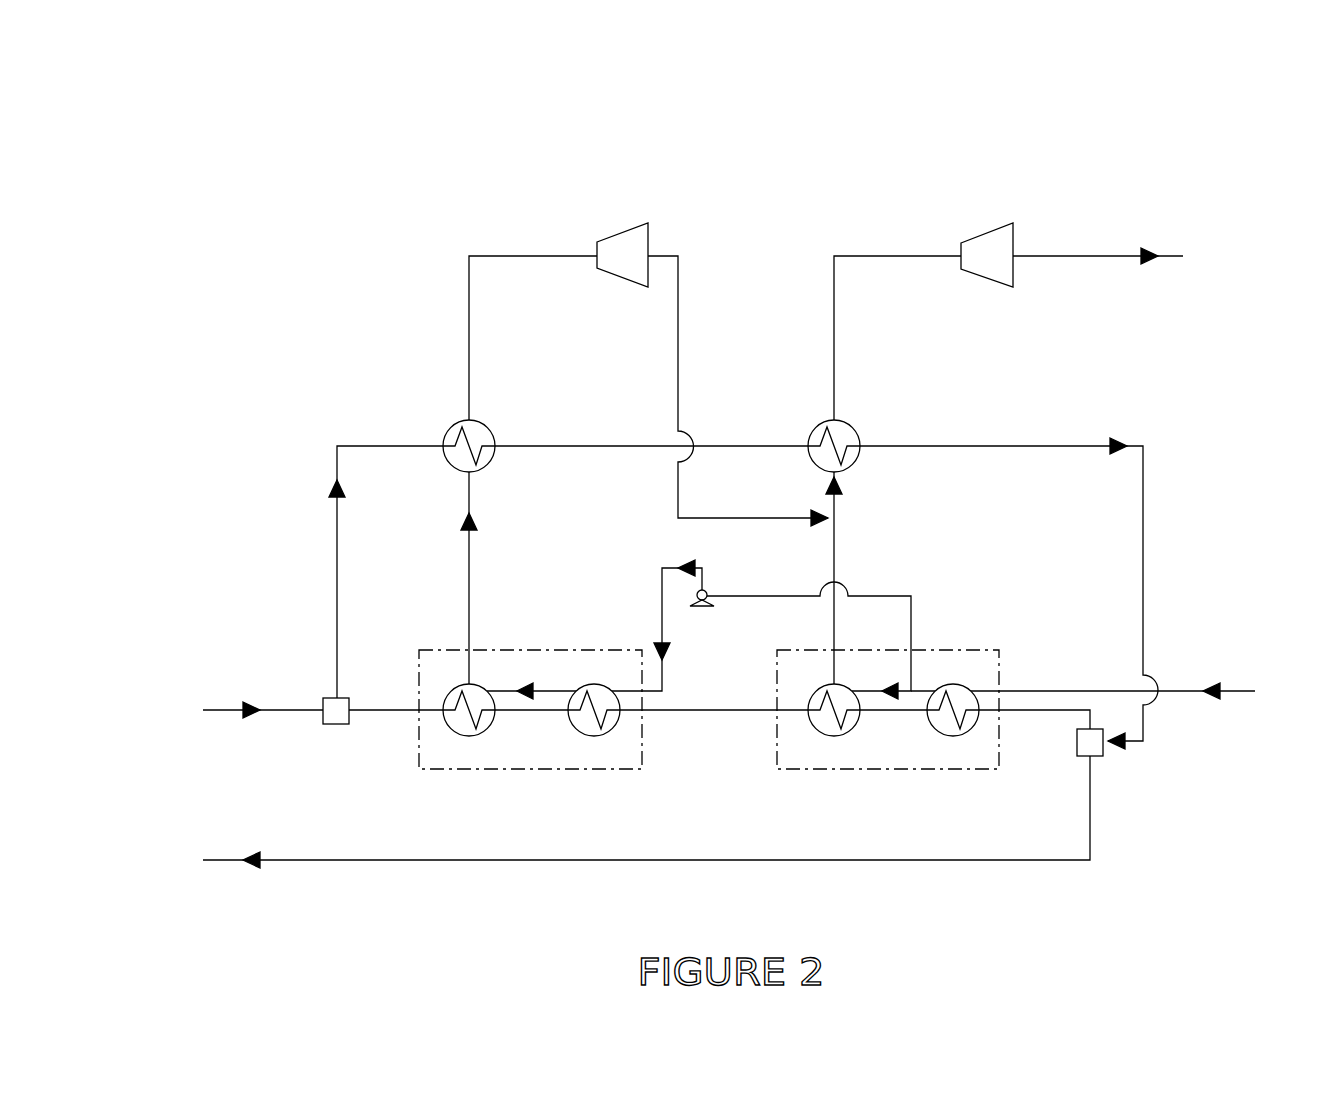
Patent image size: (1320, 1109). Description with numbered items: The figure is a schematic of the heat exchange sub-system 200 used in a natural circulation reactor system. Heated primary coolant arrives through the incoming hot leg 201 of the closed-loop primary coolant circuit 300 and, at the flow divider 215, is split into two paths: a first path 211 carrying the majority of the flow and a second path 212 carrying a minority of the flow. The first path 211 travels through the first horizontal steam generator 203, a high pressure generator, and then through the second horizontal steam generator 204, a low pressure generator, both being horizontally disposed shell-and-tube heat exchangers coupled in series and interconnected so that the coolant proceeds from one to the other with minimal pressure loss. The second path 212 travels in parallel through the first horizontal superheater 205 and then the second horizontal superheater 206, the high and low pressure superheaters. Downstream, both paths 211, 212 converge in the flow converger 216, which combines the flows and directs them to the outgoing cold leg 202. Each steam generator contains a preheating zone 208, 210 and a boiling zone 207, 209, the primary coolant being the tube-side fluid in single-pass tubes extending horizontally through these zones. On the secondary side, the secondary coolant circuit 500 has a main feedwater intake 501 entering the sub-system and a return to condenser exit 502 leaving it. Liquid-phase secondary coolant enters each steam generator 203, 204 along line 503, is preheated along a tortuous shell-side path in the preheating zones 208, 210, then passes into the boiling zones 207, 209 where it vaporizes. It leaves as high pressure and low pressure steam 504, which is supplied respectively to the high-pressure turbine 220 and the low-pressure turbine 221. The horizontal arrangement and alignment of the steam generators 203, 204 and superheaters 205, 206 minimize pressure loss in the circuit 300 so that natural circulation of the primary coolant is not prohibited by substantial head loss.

The heat exchange sub-system 200 is at (1160, 128).
The incoming hot leg 201 is at (225, 710).
The outgoing cold leg 202 is at (225, 858).
The first horizontal steam generator 203 is at (628, 650).
The second horizontal steam generator 204 is at (975, 650).
The first horizontal superheater 205 is at (490, 424).
The second horizontal superheater 206 is at (855, 425).
The boiling zone 207 is at (460, 737).
The preheating zone 208 is at (583, 737).
The boiling zone 209 is at (826, 737).
The preheating zone 210 is at (945, 737).
The first path 211 is at (378, 712).
The second path 212 is at (337, 600).
The flow divider 215 is at (338, 724).
The flow converger 216 is at (1083, 757).
The high-pressure turbine 220 is at (613, 255).
The low-pressure turbine 221 is at (978, 255).
The closed-loop primary coolant circuit 300 is at (1093, 820).
The secondary coolant circuit 500 is at (466, 328).
The main feedwater intake 501 is at (1228, 690).
The return to condenser exit 502 is at (1170, 253).
The line 503 is at (660, 692).
The high pressure and low pressure steam 504 is at (470, 598).